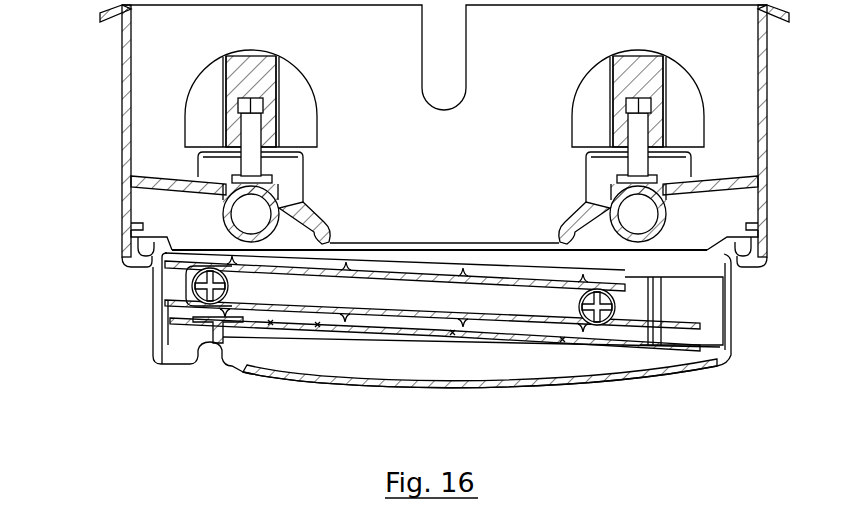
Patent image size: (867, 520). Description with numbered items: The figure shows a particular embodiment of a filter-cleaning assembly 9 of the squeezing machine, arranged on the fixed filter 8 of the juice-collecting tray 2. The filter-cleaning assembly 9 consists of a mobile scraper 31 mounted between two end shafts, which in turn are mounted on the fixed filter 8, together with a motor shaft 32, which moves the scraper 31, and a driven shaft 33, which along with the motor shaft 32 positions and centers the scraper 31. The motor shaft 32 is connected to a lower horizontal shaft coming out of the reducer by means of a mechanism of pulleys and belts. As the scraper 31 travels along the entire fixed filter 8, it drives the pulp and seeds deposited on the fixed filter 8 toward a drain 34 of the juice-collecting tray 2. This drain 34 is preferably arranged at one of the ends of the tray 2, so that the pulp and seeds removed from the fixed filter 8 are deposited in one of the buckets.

The juice-collecting tray 2 is at (687, 365).
The fixed filter 8 is at (510, 338).
The filter-cleaning assembly 9 is at (404, 327).
The mobile scraper 31 is at (395, 275).
The motor shaft 32 is at (200, 289).
The driven shaft 33 is at (597, 312).
The drain 34 is at (177, 367).